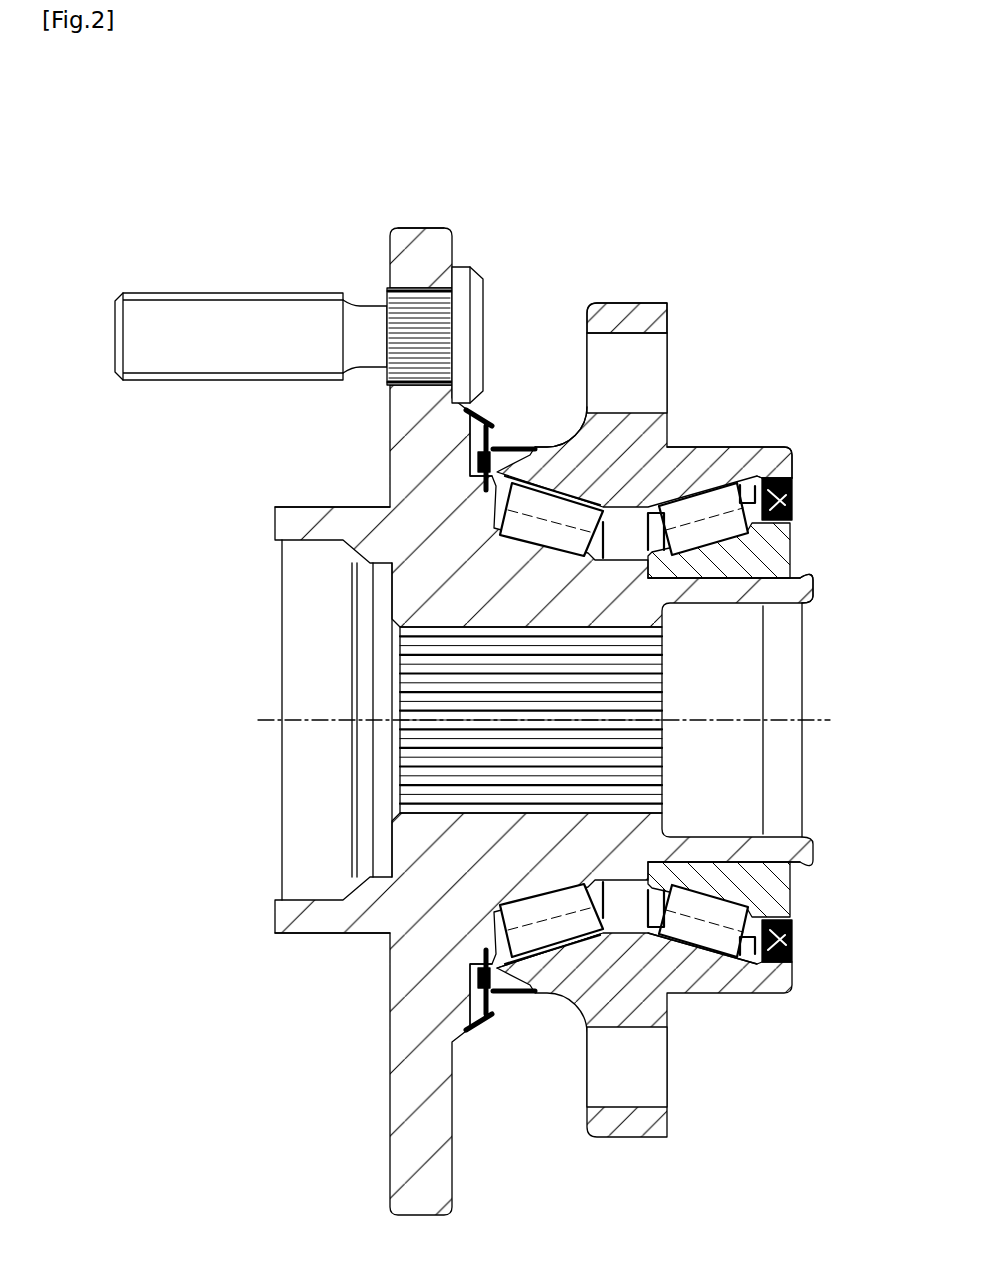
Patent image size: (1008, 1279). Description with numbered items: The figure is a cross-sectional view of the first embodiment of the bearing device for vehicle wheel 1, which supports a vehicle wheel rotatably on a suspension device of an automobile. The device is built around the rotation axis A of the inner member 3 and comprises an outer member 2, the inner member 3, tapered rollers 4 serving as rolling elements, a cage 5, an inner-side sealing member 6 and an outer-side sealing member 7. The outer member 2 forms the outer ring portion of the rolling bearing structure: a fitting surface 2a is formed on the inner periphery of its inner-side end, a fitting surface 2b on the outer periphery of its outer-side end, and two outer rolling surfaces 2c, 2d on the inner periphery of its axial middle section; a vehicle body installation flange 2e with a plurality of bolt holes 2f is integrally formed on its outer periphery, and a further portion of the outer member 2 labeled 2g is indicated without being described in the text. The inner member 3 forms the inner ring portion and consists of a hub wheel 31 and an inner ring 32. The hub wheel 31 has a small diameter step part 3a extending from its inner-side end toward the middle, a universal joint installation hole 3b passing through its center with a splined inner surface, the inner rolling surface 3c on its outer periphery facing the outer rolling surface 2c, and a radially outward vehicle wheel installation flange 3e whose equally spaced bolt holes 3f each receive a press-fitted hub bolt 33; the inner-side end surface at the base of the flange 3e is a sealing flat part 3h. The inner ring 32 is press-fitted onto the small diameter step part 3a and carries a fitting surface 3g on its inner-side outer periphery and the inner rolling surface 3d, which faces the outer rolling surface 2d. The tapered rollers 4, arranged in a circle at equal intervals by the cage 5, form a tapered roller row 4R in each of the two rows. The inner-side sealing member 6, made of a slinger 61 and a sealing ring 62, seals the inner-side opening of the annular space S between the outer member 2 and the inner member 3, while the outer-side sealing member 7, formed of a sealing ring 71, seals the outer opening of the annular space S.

The bearing device for vehicle wheel 1 is at (118, 218).
The outer member 2 is at (733, 386).
The fitting surface 2a is at (752, 480).
The fitting surface 2b is at (515, 450).
The outer rolling surface 2c is at (562, 948).
The outer rolling surface 2d is at (693, 945).
The vehicle body installation flange 2e is at (618, 318).
The bolt holes 2f is at (668, 343).
The inboard end face of outer ring 2g is at (772, 452).
The inner member 3 is at (234, 674).
The small diameter step part 3a is at (812, 592).
The universal joint installation hole 3b is at (402, 630).
The inner rolling surface 3c is at (522, 978).
The inner rolling surface 3d is at (712, 898).
The vehicle wheel installation flange 3e is at (432, 237).
The bolt holes 3f is at (392, 298).
The fitting surface 3g is at (748, 522).
The sealing flat part 3h is at (478, 455).
The hub wheel 31 is at (302, 508).
The inner ring 32 is at (780, 552).
The hub bolt 33 is at (240, 292).
The tapered rollers 4 is at (624, 720).
The tapered roller row 4R is at (715, 535).
The cage 5 is at (532, 487).
The inner-side sealing member 6 is at (822, 704).
The slinger 61 is at (782, 500).
The sealing ring 62 is at (795, 478).
The outer-side sealing member 7 is at (513, 688).
The sealing ring 71 is at (499, 418).
The annular space S is at (628, 510).
The rotation axis A is at (553, 723).